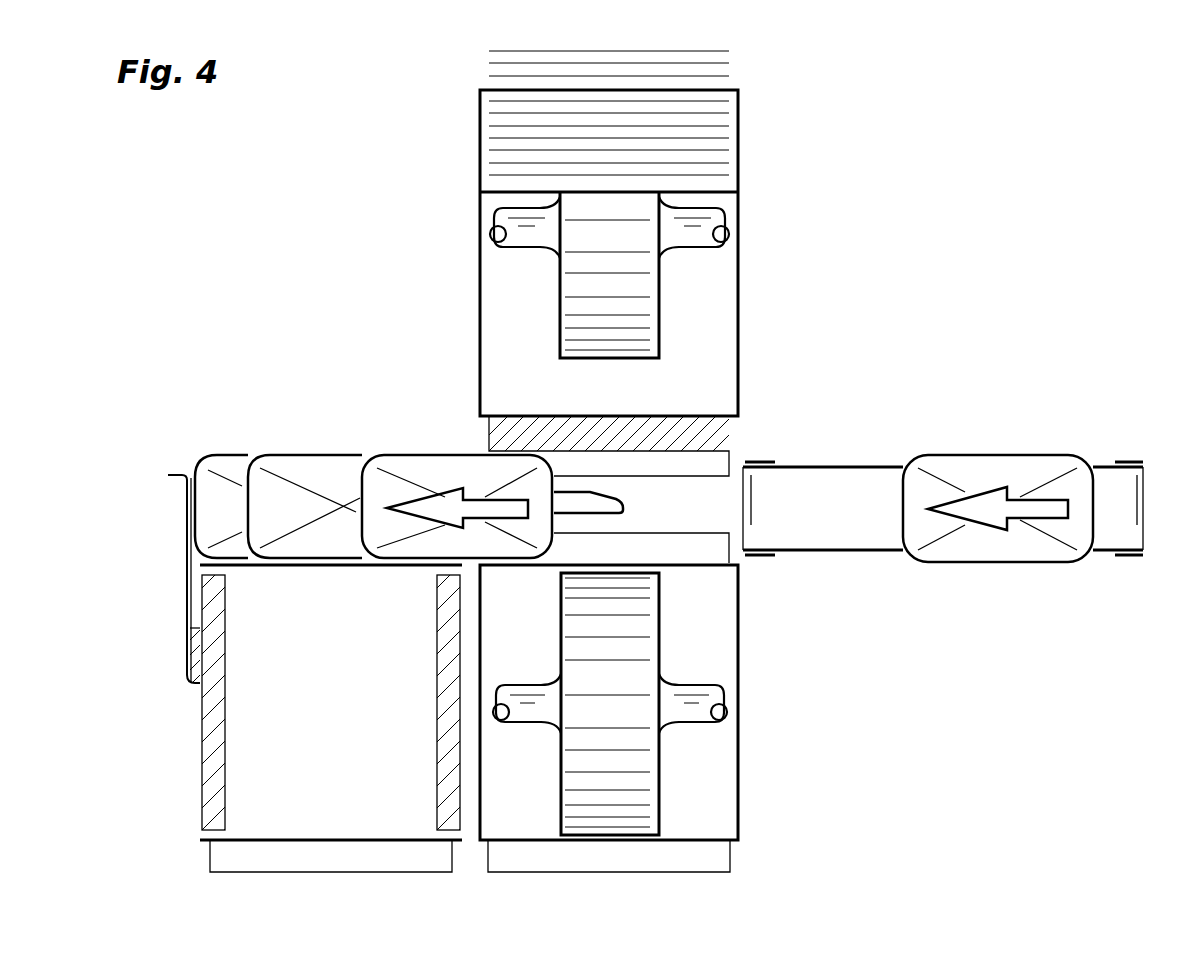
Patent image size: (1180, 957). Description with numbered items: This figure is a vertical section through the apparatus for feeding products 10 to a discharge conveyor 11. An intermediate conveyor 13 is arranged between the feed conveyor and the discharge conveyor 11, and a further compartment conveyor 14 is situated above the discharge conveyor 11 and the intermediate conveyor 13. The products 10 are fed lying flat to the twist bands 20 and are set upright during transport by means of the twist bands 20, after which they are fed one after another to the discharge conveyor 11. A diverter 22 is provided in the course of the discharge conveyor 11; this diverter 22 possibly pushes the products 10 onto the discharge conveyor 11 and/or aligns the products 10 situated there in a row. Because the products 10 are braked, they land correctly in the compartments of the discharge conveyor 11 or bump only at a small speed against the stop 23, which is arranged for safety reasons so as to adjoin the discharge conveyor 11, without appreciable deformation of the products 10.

The product 10 is at (445, 465).
The discharge conveyor 11 is at (305, 348).
The intermediate conveyor 13 is at (763, 667).
The compartment conveyor 14 is at (773, 198).
The twist band 20 is at (822, 500).
The diverter 22 is at (602, 504).
The stop 23 is at (183, 578).